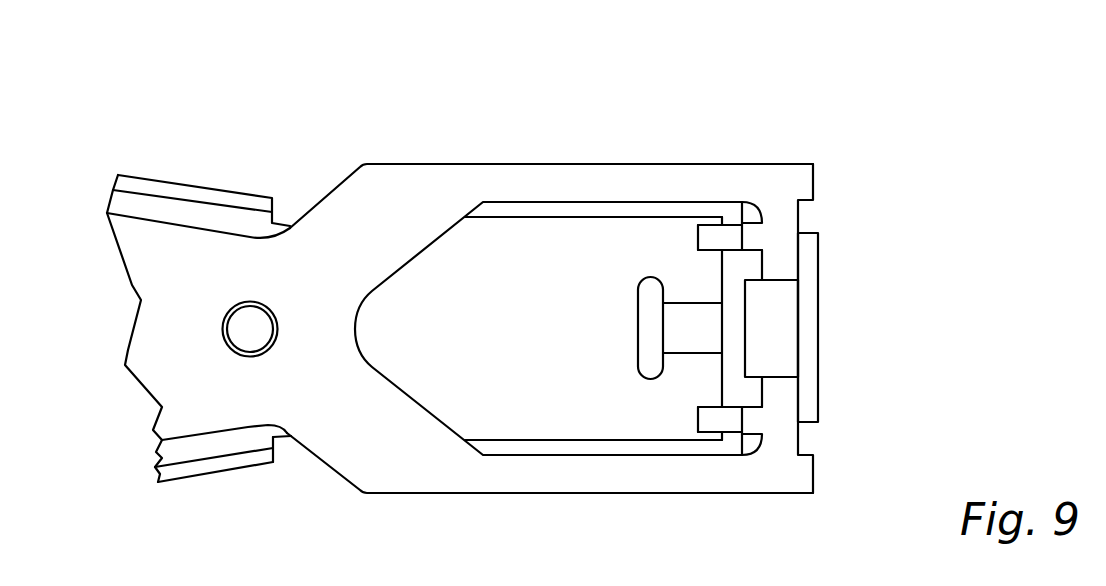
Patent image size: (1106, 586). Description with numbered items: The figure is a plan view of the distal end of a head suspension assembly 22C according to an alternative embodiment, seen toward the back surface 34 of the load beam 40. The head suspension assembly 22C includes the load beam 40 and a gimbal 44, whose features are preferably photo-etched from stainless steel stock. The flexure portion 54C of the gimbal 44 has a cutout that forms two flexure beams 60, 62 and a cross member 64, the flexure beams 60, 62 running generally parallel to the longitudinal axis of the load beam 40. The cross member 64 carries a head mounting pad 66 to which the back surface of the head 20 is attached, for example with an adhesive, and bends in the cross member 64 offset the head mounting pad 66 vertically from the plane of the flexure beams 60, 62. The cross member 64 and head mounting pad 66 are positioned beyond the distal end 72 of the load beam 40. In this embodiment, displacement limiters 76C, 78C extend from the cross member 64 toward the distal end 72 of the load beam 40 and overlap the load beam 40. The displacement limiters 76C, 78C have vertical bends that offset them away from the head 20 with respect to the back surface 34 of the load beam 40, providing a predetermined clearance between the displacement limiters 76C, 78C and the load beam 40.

The head suspension assembly 22C is at (489, 280).
The load beam 40 is at (218, 192).
The gimbal 44 is at (137, 250).
The back surface 34 is at (430, 380).
The flexure portion 54C is at (453, 157).
The flexure beam 60 is at (520, 182).
The flexure beam 62 is at (503, 480).
The cross member 64 is at (800, 217).
The head 20 is at (818, 257).
The displacement limiter 76C is at (742, 203).
The displacement limiter 78C is at (748, 436).
The head mounting pad 66 is at (773, 313).
The distal end 72 is at (723, 392).